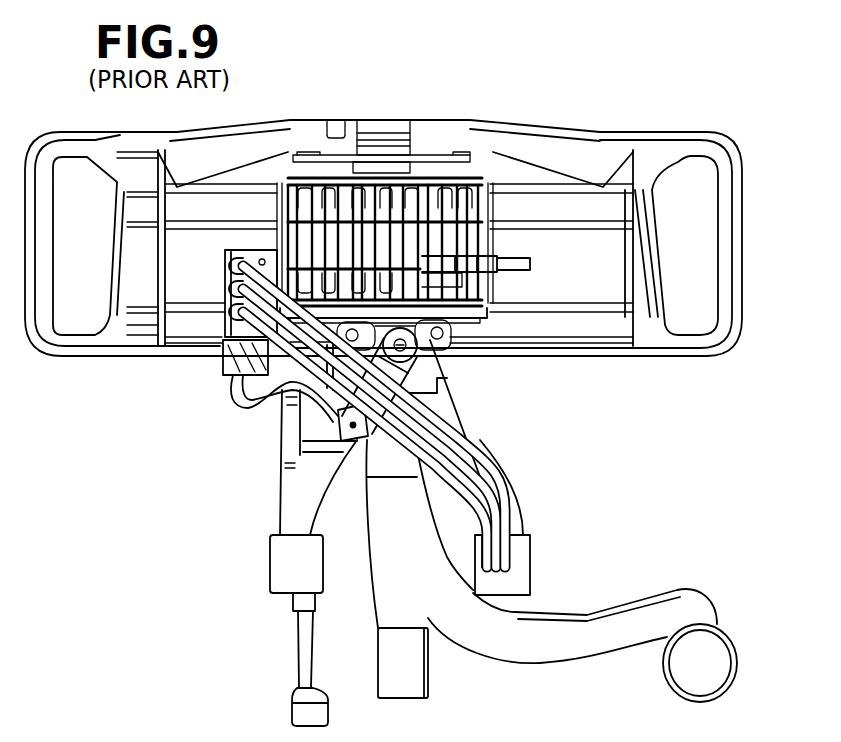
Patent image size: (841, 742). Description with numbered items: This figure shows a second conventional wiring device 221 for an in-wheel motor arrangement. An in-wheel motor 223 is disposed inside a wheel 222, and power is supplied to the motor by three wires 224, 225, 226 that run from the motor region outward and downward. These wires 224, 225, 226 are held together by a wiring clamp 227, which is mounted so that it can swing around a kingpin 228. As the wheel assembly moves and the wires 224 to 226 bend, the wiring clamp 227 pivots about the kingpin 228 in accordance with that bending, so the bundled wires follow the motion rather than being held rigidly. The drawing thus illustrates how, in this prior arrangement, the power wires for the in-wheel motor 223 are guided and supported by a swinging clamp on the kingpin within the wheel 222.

The wiring device 221 is at (345, 441).
The wheel 222 is at (470, 121).
The in-wheel motor 223 is at (521, 334).
The wire 224 is at (452, 436).
The wire 225 is at (450, 453).
The wire 226 is at (457, 470).
The wiring clamp 227 is at (335, 430).
The kingpin 228 is at (418, 348).